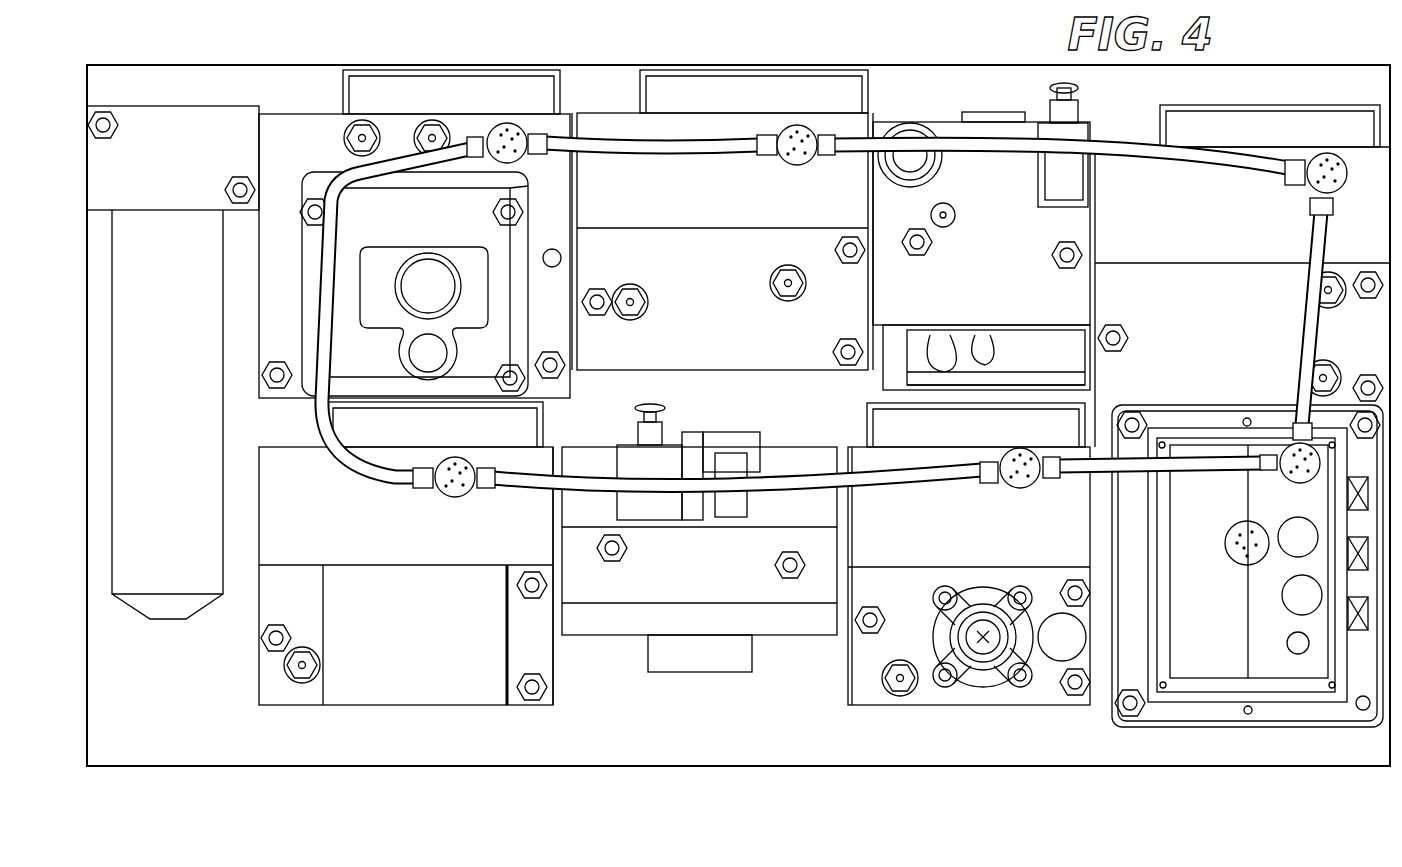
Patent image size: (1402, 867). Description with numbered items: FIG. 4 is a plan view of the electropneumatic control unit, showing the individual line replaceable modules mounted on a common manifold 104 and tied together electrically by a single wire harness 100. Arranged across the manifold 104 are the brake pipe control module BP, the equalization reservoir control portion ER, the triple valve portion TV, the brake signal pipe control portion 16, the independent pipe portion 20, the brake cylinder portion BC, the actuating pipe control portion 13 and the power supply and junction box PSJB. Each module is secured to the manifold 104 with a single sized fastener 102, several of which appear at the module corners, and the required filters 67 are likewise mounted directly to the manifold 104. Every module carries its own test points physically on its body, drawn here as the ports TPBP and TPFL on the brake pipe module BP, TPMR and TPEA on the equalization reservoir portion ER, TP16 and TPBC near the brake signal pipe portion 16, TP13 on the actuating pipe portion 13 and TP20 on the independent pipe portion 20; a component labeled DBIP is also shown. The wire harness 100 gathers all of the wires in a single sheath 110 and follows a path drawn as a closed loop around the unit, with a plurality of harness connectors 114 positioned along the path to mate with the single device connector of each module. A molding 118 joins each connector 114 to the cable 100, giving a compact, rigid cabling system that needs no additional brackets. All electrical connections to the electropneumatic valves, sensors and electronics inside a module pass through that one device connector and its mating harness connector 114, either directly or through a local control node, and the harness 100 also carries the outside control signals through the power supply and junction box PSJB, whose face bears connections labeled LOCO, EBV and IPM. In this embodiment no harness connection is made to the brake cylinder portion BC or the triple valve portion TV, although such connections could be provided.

The wire harness 100 is at (620, 127).
The fastener 102 is at (104, 111).
The manifold 104 is at (294, 80).
The sheath 110 is at (692, 153).
The harness connector 114 is at (516, 118).
The molding 118 is at (797, 165).
The filter 67 is at (157, 582).
The 20 pipe portion 20 is at (349, 598).
The 16 pipe control portion 16 is at (1157, 299).
The 13 pipe control portion 13 is at (897, 599).
The brake pipe control module BP is at (306, 148).
The equalization reservoir control portion ER is at (606, 263).
The triple valve portion TV is at (995, 302).
The brake cylinder portion BC is at (635, 590).
The double-check indicator port DBIP is at (725, 453).
The power supply and junction box PSJB is at (1185, 649).
The locomotive connector LOCO is at (1287, 530).
The electronic brake valve connector EBV is at (1307, 593).
The integrated processor module connector IPM is at (1302, 650).
The brake pipe test port TPBP is at (366, 122).
The flow test port TPFL is at (436, 122).
The main reservoir test port TPMR is at (640, 300).
The equalizing air test port TPEA is at (779, 292).
The 16 pipe test port TP16 is at (1333, 303).
The brake cylinder test port TPBC is at (1328, 370).
The 13 pipe test port TP13 is at (897, 694).
The 20 pipe test port TP20 is at (362, 691).